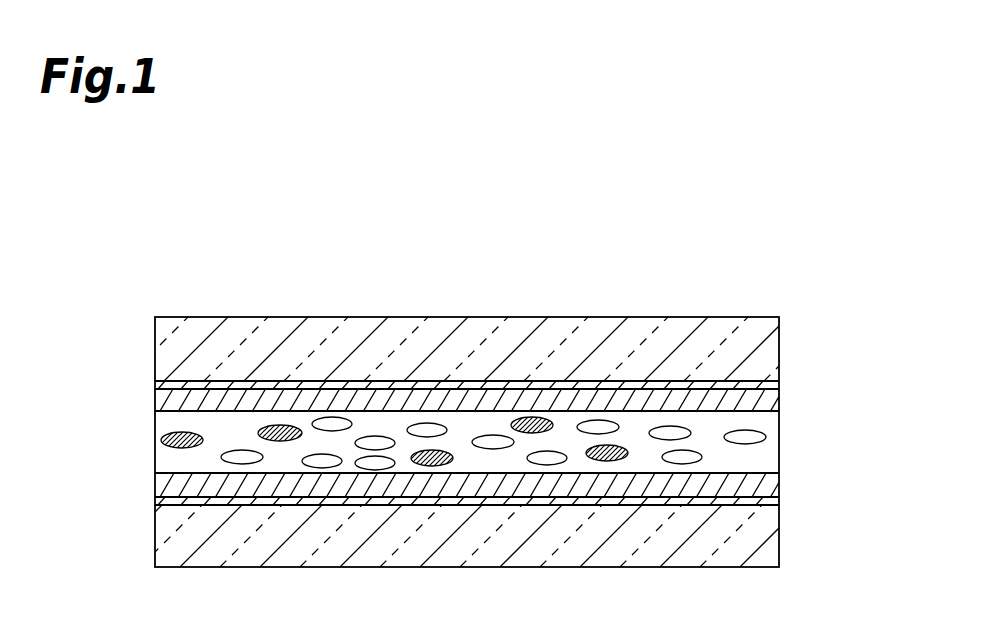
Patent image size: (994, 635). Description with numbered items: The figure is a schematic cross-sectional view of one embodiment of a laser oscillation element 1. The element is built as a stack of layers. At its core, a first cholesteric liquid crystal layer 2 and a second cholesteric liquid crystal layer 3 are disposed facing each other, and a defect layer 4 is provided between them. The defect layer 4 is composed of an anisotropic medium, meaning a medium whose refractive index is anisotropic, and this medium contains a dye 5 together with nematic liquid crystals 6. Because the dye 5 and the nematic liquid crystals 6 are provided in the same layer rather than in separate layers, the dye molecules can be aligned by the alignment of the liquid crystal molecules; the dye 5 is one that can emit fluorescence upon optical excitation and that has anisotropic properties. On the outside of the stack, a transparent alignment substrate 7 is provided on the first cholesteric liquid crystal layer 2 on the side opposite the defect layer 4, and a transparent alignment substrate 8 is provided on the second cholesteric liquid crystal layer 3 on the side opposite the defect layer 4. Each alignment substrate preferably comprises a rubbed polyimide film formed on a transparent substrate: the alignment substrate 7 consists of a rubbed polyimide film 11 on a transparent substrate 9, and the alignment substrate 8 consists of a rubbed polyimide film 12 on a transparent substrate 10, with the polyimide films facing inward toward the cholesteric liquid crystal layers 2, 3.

The laser oscillation element 1 is at (684, 217).
The first cholesteric liquid crystal layer 2 is at (770, 395).
The second cholesteric liquid crystal layer 3 is at (770, 482).
The defect layer 4 is at (791, 446).
The dye 5 is at (277, 432).
The nematic liquid crystals 6 is at (427, 430).
The transparent alignment substrate 7 is at (71, 337).
The transparent alignment substrate 8 is at (71, 493).
The transparent substrate 9 is at (165, 343).
The transparent substrate 10 is at (163, 537).
The rubbed polyimide film 11 is at (163, 383).
The rubbed polyimide film 12 is at (163, 500).